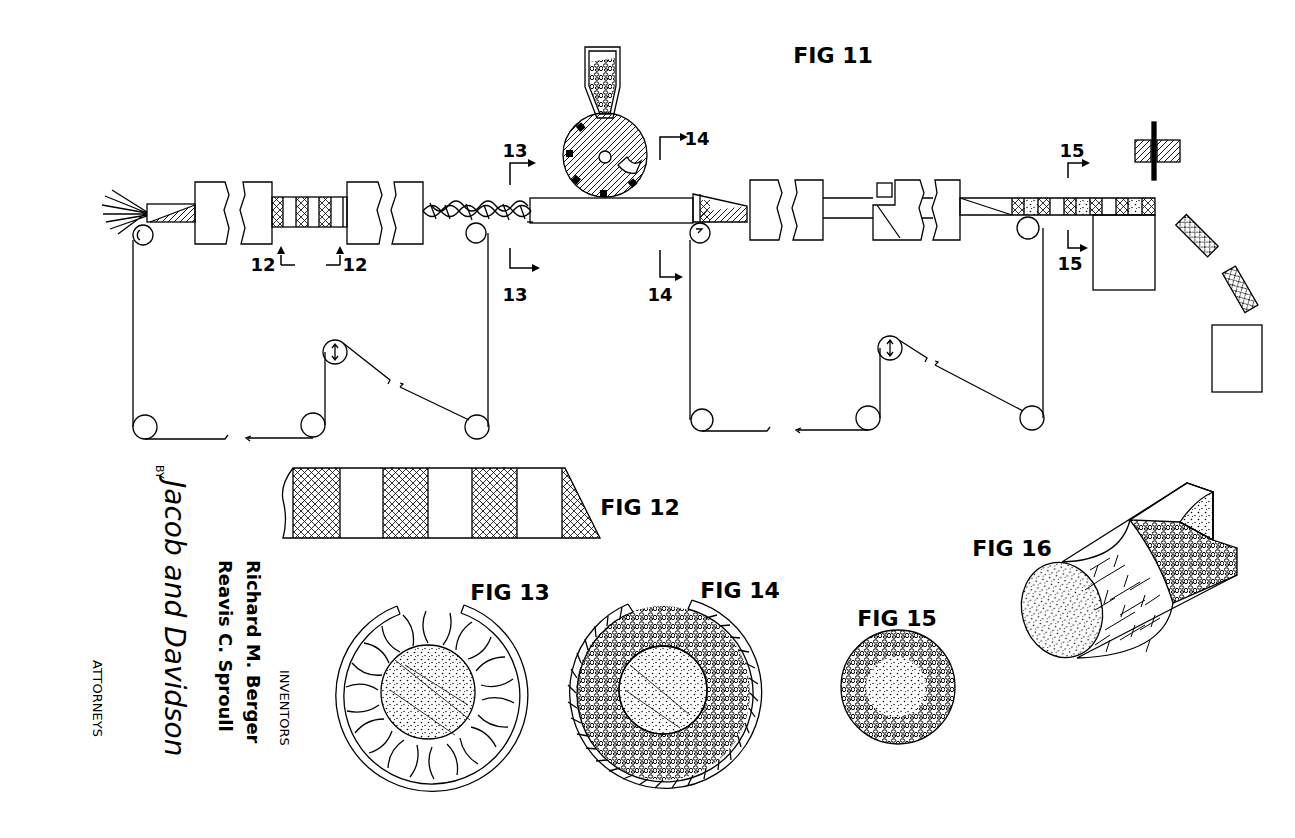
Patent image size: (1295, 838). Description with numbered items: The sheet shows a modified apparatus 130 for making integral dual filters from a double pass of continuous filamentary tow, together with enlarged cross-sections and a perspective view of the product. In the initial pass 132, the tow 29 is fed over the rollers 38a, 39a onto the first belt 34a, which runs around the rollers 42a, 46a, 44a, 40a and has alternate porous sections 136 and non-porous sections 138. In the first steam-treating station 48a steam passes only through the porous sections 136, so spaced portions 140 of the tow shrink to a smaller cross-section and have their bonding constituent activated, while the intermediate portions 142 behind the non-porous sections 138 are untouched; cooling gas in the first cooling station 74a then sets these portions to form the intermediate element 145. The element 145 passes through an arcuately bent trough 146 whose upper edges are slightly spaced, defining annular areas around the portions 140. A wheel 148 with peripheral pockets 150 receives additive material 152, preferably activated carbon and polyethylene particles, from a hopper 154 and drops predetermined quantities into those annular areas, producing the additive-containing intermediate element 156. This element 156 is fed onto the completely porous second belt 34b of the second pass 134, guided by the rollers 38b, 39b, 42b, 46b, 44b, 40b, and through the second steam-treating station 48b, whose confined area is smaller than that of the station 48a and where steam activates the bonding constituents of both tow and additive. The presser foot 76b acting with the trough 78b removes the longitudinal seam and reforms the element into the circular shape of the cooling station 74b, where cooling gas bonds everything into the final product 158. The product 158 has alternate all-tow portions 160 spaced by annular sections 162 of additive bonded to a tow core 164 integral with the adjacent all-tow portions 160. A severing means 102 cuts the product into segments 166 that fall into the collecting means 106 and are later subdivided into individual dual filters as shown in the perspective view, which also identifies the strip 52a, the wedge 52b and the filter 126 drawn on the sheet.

In FIG. 11, the tow 29 is at (122, 196).
In FIG. 11, the tow 52a is at (157, 204).
In FIG. 11, the first steam-treating station 48a is at (258, 181).
In FIG. 11, the non-porous sections 138 is at (287, 205).
In FIG. 12, the non-porous sections 138 is at (432, 475).
In FIG. 11, the porous sections 136 is at (321, 205).
In FIG. 12, the porous sections 136 is at (488, 535).
In FIG. 11, the first cooling station 74a is at (403, 181).
In FIG. 11, the portions of relatively smaller cross-section 140 is at (455, 204).
In FIG. 13, the portions of relatively smaller cross-section 140 is at (448, 680).
In FIG. 14, the portions of relatively smaller cross-section 140 is at (737, 658).
In FIG. 11, the intermediate portions 142 is at (487, 204).
In FIG. 13, the intermediate portions 142 is at (497, 663).
In FIG. 14, the intermediate portions 142 is at (748, 680).
In FIG. 11, the roller 38a is at (151, 243).
In FIG. 11, the roller 39a is at (471, 242).
In FIG. 11, the first belt 34a is at (134, 331).
In FIG. 12, the first belt 34a is at (380, 540).
In FIG. 11, the roller 42a is at (155, 418).
In FIG. 11, the roller 46a is at (305, 417).
In FIG. 11, the roller 44a is at (343, 344).
In FIG. 11, the roller 40a is at (475, 415).
In FIG. 11, the modified means 130 is at (310, 124).
In FIG. 11, the initial pass 132 is at (511, 351).
In FIG. 11, the second pass 134 is at (641, 377).
In FIG. 11, the intermediate element 145 is at (533, 222).
In FIG. 11, the trough 146 is at (633, 223).
In FIG. 13, the trough 146 is at (460, 780).
In FIG. 14, the trough 146 is at (712, 775).
In FIG. 11, the wheel 148 is at (633, 139).
In FIG. 11, the peripheral pockets 150 is at (566, 150).
In FIG. 11, the additive material 152 is at (618, 74).
In FIG. 14, the additive material 152 is at (735, 732).
In FIG. 11, the hopper 154 is at (585, 67).
In FIG. 11, the second ply strip 52b is at (713, 195).
In FIG. 11, the roller 38b is at (702, 244).
In FIG. 11, the additive-containing intermediate element 156 is at (720, 212).
In FIG. 11, the second steam-treating station 48b is at (817, 179).
In FIG. 11, the presser foot 76b is at (884, 183).
In FIG. 11, the second belt 34b is at (841, 198).
In FIG. 11, the trough 78b is at (898, 220).
In FIG. 11, the cooling station 74b is at (957, 179).
In FIG. 11, the final product 158 is at (1036, 197).
In FIG. 11, the all-tow portions 160 is at (1009, 200).
In FIG. 16, the all-tow portions 160 is at (1083, 545).
In FIG. 11, the annular section 162 is at (1115, 197).
In FIG. 15, the annular section 162 is at (927, 725).
In FIG. 11, the roller 39b is at (1020, 238).
In FIG. 11, the severing means 102 is at (1152, 126).
In FIG. 11, the segments 166 is at (1197, 228).
In FIG. 11, the collecting means 106 is at (1212, 334).
In FIG. 11, the roller 42b is at (709, 410).
In FIG. 11, the roller 46b is at (857, 412).
In FIG. 11, the roller 44b is at (902, 352).
In FIG. 11, the roller 40b is at (1025, 408).
In FIG. 15, the tow core 164 is at (950, 700).
In FIG. 16, the tow core 164 is at (1212, 520).
In FIG. 16, the finished article 126 is at (1200, 590).